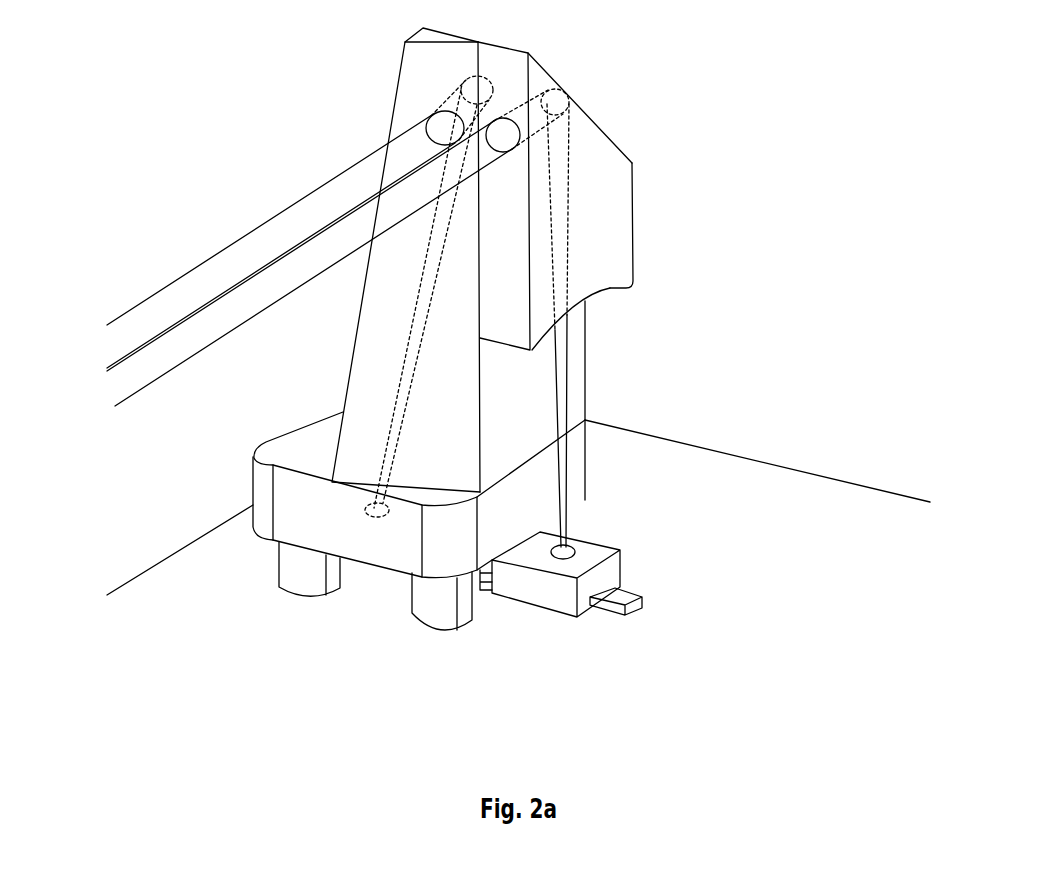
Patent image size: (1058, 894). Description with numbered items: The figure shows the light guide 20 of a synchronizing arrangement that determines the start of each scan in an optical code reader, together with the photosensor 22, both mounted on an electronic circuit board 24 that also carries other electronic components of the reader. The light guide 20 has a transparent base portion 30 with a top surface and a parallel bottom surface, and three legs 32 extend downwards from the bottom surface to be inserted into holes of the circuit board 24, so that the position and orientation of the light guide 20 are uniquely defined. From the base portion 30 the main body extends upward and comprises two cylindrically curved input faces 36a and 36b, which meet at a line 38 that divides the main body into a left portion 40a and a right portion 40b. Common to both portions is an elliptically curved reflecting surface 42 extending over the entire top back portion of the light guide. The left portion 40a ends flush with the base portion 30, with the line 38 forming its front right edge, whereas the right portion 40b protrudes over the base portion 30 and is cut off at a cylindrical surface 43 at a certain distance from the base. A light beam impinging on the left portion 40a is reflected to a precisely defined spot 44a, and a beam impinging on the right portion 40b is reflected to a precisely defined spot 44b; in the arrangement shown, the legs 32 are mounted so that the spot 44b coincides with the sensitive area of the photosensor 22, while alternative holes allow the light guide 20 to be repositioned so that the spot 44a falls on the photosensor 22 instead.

The light guide 20 is at (648, 216).
The photosensor 22 is at (610, 571).
The electronic circuit board 24 is at (820, 538).
The base portion 30 is at (290, 500).
The legs 32 is at (302, 579).
The input face 36a is at (385, 360).
The input face 36b is at (517, 316).
The line 38 is at (480, 209).
The left portion 40a is at (400, 47).
The right portion 40b is at (593, 183).
The elliptically curved reflecting surface 42 is at (606, 126).
The cylindrical surface 43 is at (598, 297).
The spot 44a is at (373, 522).
The spot 44b is at (566, 552).